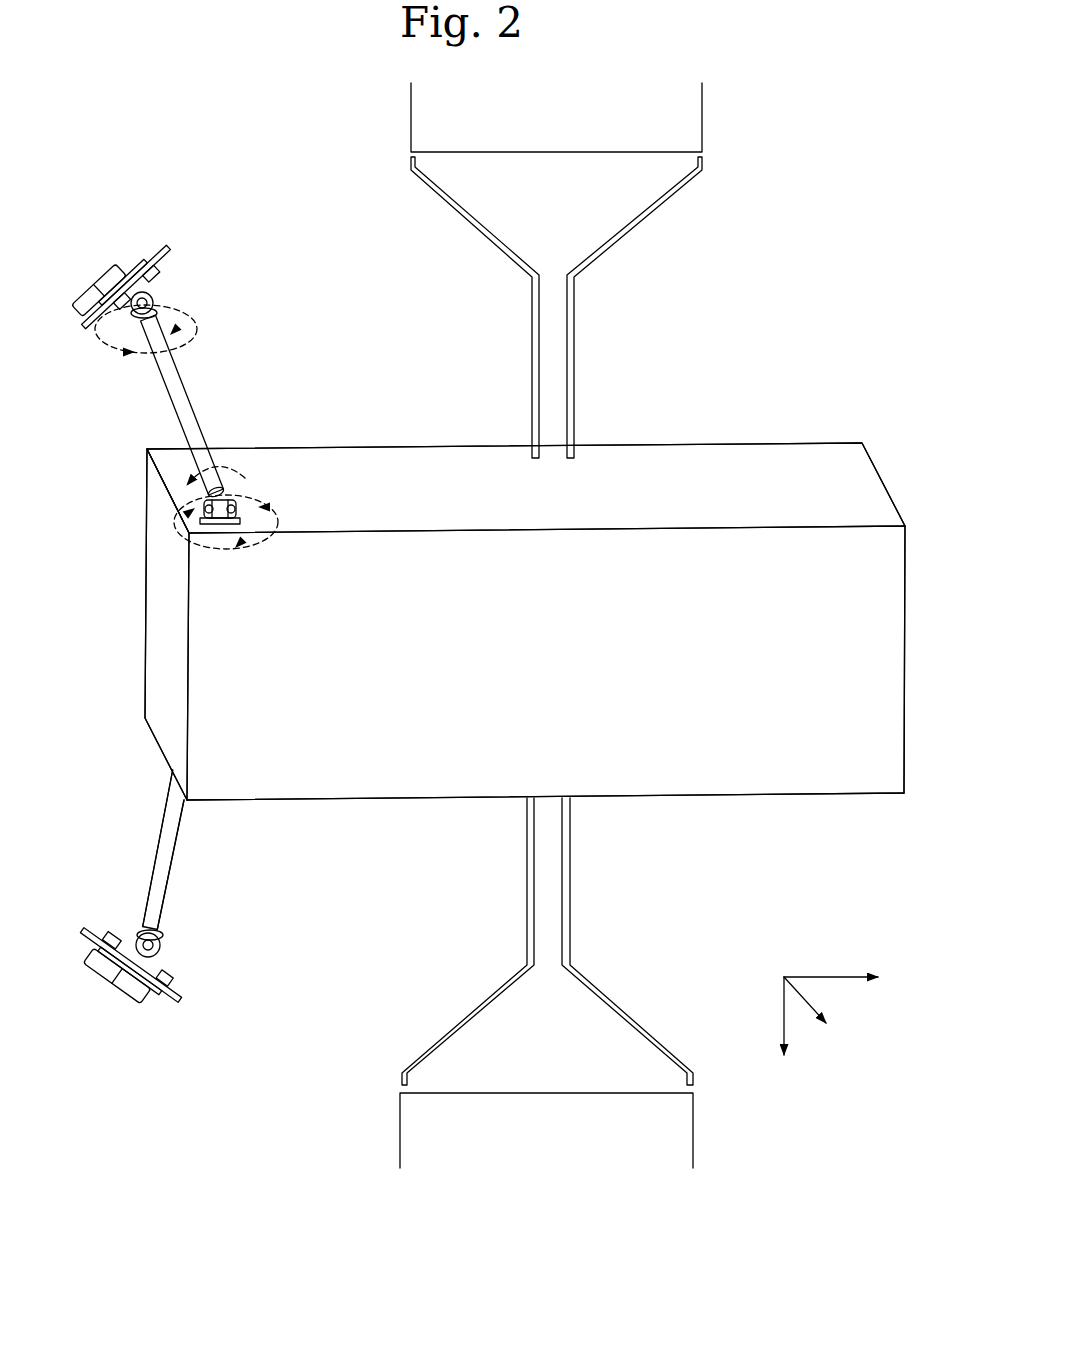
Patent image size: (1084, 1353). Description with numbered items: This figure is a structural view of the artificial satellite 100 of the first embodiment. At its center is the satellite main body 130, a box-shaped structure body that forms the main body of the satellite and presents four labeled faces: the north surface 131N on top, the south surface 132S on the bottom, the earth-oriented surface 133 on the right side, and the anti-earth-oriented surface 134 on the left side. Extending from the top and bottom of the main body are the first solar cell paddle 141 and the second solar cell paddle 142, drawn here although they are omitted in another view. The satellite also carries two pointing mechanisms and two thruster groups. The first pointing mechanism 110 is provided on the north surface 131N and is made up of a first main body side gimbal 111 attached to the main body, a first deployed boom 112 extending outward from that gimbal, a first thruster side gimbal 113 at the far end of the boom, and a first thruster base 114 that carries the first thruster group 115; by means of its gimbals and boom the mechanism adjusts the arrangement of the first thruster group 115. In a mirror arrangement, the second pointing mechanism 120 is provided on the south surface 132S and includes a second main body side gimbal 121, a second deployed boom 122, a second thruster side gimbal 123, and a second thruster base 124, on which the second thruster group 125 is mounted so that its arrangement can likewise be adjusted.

The artificial satellite 100 is at (722, 374).
The first pointing mechanism 110 is at (142, 398).
The first main body side gimbal 111 is at (221, 496).
The first deployed boom 112 is at (180, 375).
The first thruster side gimbal 113 is at (158, 296).
The first thruster base 114 is at (163, 246).
The first thruster group 115 is at (80, 340).
The second pointing mechanism 120 is at (132, 845).
The second main body side gimbal 121 is at (207, 815).
The second deployed boom 122 is at (167, 888).
The second thruster side gimbal 123 is at (158, 963).
The second thruster base 124 is at (173, 1005).
The second thruster group 125 is at (108, 1008).
The satellite main body 130 is at (805, 764).
The north surface 131N is at (372, 468).
The south surface 132S is at (374, 799).
The earth-oriented surface 133 is at (904, 650).
The anti-earth-oriented surface 134 is at (162, 652).
The first solar cell paddle 141 is at (570, 352).
The second solar cell paddle 142 is at (568, 897).